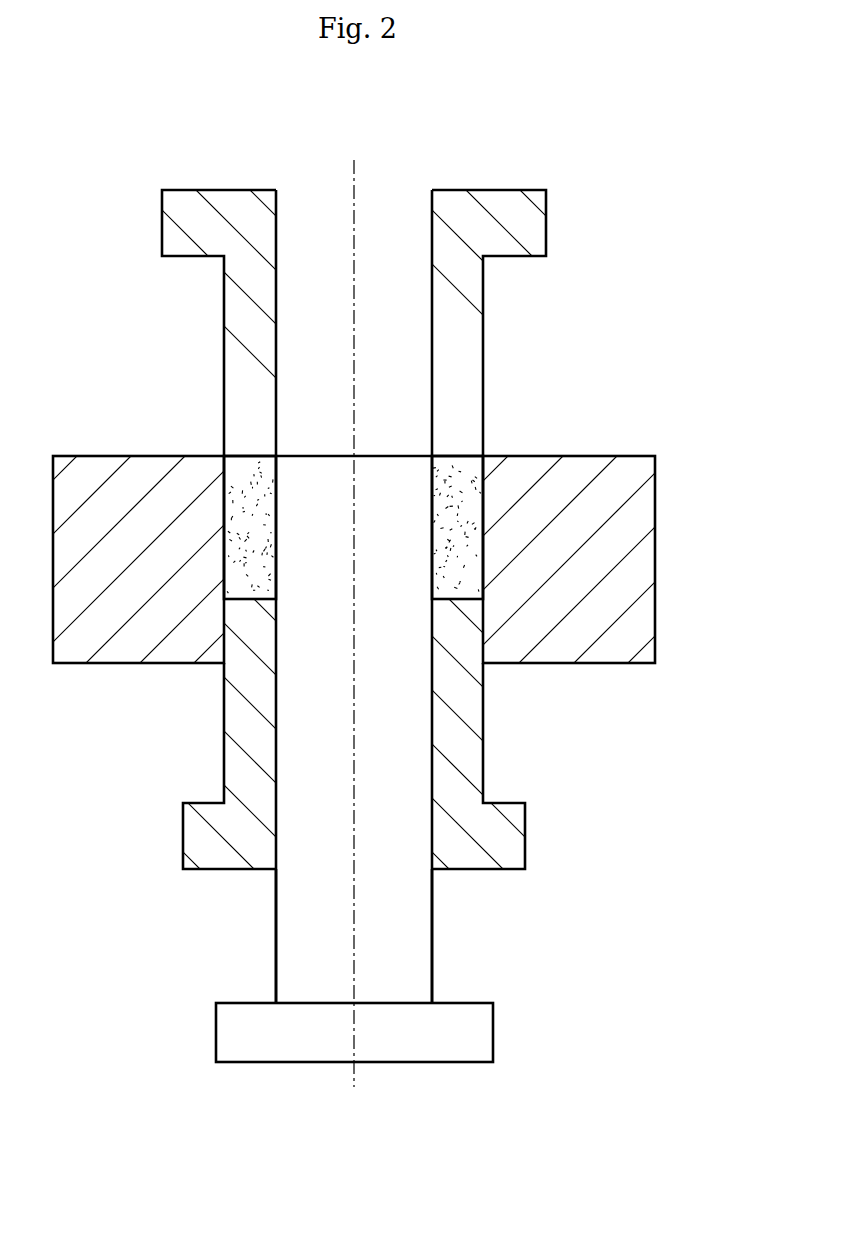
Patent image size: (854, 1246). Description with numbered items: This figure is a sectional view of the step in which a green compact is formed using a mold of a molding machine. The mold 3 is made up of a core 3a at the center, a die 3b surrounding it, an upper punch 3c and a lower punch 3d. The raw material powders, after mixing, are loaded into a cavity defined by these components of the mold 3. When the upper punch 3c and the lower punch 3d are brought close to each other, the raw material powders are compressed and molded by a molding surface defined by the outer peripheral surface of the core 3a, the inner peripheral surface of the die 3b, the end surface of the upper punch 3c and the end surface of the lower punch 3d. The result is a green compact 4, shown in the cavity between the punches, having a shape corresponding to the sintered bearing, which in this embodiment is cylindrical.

The mold 3 is at (427, 623).
The core 3a is at (420, 938).
The die 3b is at (638, 566).
The upper punch 3c is at (473, 334).
The lower punch 3d is at (472, 762).
The green compact 4 is at (243, 502).